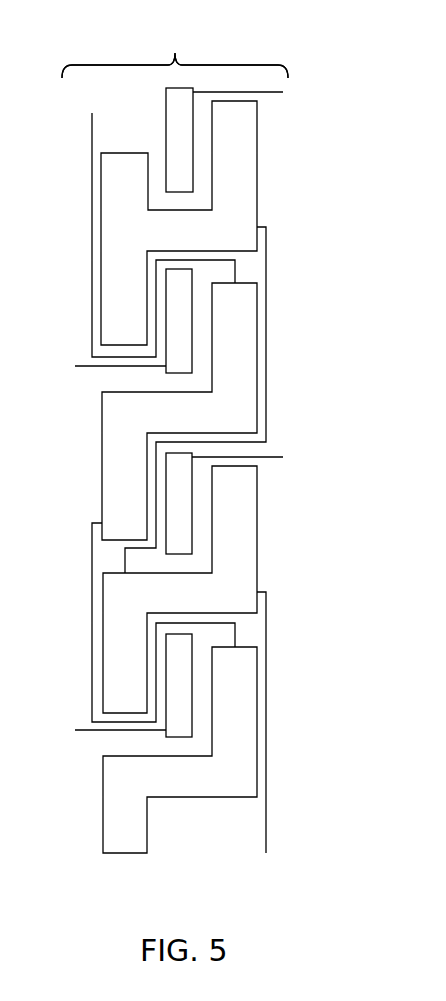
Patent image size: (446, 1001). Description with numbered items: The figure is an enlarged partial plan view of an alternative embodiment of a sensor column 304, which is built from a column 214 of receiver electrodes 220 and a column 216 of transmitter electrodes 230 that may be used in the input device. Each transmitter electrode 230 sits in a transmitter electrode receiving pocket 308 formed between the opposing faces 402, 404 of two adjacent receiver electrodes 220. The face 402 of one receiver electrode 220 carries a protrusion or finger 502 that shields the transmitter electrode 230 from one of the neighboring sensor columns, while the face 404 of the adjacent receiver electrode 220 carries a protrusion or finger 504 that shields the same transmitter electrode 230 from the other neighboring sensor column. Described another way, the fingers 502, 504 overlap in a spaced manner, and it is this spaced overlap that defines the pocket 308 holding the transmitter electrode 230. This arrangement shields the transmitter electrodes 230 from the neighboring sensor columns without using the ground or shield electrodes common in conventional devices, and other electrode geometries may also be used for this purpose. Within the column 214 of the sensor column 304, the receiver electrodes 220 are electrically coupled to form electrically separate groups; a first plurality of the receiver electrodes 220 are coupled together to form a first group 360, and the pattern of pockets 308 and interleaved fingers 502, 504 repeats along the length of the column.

The column of receiver electrodes 214 is at (175, 52).
The column of transmitter electrodes 216 is at (175, 65).
The receiver electrode 220 is at (202, 242).
The transmitter electrode 230 is at (165, 117).
The sensor column 304 is at (292, 178).
The transmitter electrode receiving pocket 308 is at (202, 360).
The first group 360 is at (125, 200).
The face 402 is at (238, 250).
The face 404 is at (122, 392).
The finger 502 is at (125, 305).
The finger 504 is at (242, 302).